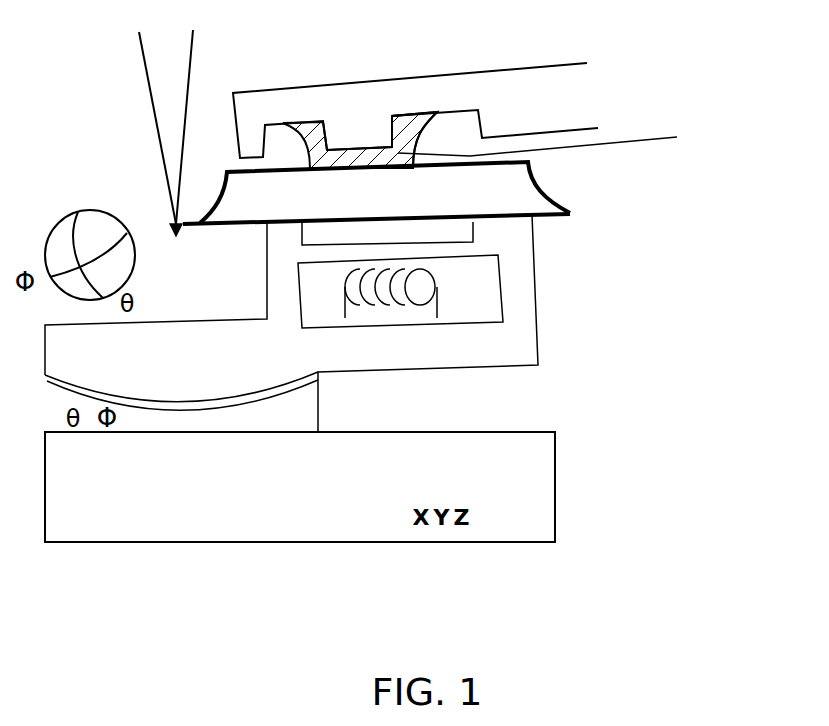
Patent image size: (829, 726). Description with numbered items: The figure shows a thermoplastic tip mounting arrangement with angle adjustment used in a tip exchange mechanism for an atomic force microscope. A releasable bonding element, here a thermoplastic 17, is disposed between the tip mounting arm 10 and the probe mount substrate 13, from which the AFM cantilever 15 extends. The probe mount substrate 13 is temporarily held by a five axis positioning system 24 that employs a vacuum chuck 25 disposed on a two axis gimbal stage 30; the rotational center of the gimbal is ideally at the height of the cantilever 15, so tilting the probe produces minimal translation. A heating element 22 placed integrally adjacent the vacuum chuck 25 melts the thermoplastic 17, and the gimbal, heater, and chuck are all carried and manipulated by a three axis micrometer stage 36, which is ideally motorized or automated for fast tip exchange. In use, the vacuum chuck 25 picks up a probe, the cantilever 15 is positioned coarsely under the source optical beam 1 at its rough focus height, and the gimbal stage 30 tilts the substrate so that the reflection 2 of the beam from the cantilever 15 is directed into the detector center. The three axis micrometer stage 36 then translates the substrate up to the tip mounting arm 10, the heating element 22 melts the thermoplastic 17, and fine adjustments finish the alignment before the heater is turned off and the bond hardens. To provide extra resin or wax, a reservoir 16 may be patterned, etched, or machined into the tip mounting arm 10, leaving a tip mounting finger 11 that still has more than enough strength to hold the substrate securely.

The source optical beam 1 is at (193, 78).
The reflection of the source optical beam 2 is at (150, 75).
The tip mounting arm 10 is at (415, 110).
The tip mounting finger 11 is at (357, 140).
The probe mount substrate 13 is at (376, 193).
The AFM cantilever 15 is at (182, 240).
The reservoir 16 is at (427, 140).
The thermoplastic 17 is at (550, 143).
The heating element 22 is at (400, 291).
The five axis positioning system 24 is at (348, 323).
The vacuum chuck 25 is at (387, 233).
The two axis gimbal stage 30 is at (181, 389).
The three axis micrometer stage 36 is at (300, 487).